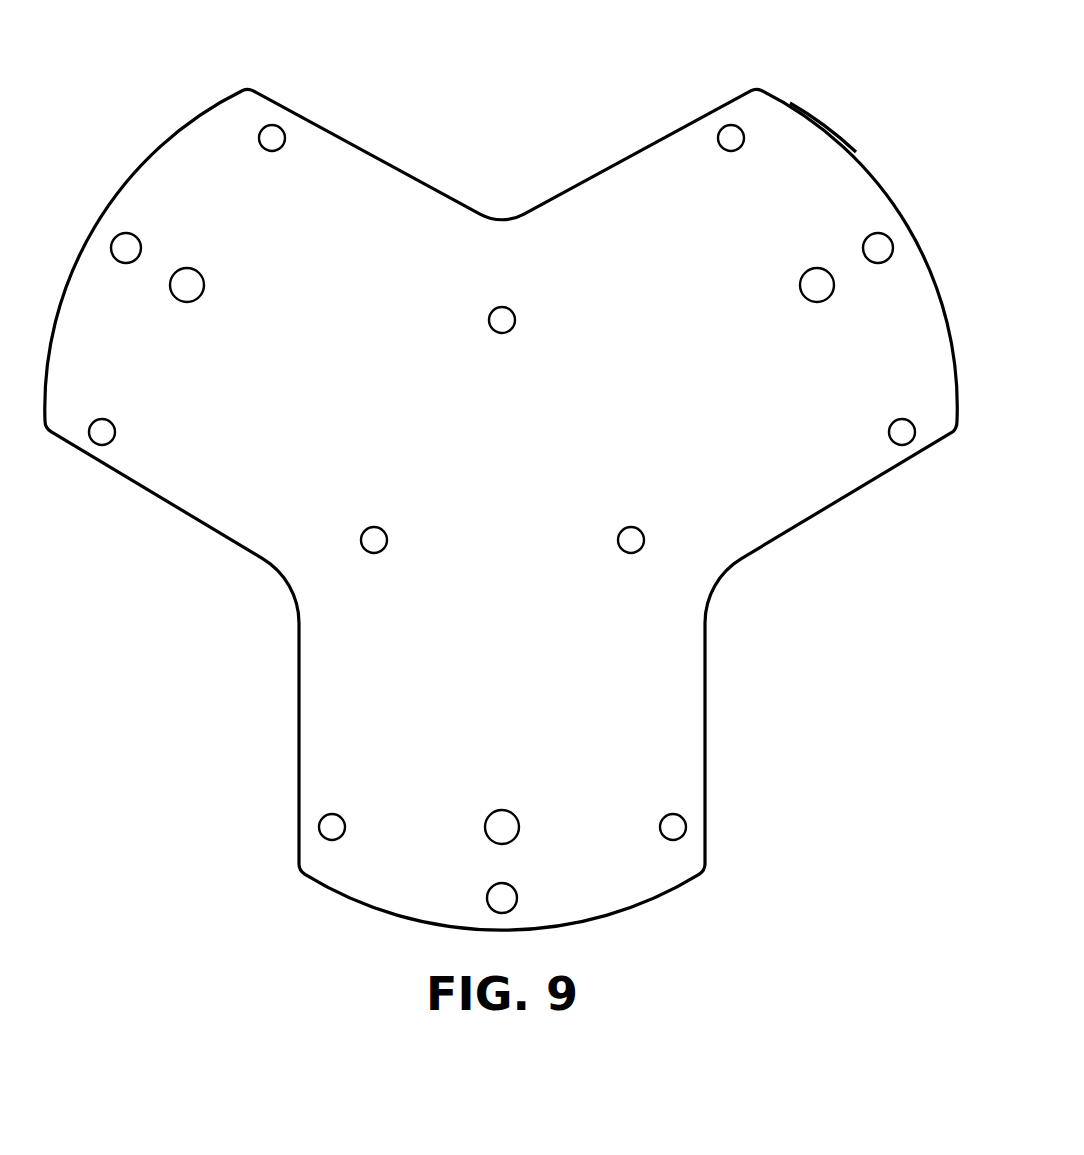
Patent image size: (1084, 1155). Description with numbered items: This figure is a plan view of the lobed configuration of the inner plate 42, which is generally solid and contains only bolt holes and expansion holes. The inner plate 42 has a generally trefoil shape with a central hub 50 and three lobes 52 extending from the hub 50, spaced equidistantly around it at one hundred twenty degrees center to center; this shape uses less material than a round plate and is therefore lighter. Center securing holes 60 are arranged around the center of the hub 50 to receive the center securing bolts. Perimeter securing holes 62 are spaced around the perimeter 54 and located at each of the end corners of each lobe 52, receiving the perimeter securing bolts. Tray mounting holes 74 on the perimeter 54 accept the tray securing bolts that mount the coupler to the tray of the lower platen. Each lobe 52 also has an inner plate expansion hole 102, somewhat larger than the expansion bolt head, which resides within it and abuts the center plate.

The inner plate 42 is at (213, 53).
The perimeter 54 is at (829, 124).
The central hub 50 is at (489, 459).
The lobes 52 is at (267, 346).
The center securing holes 60 is at (515, 320).
The perimeter securing holes 62 is at (260, 142).
The tray mounting holes 74 is at (137, 238).
The inner plate expansion hole 102 is at (204, 288).